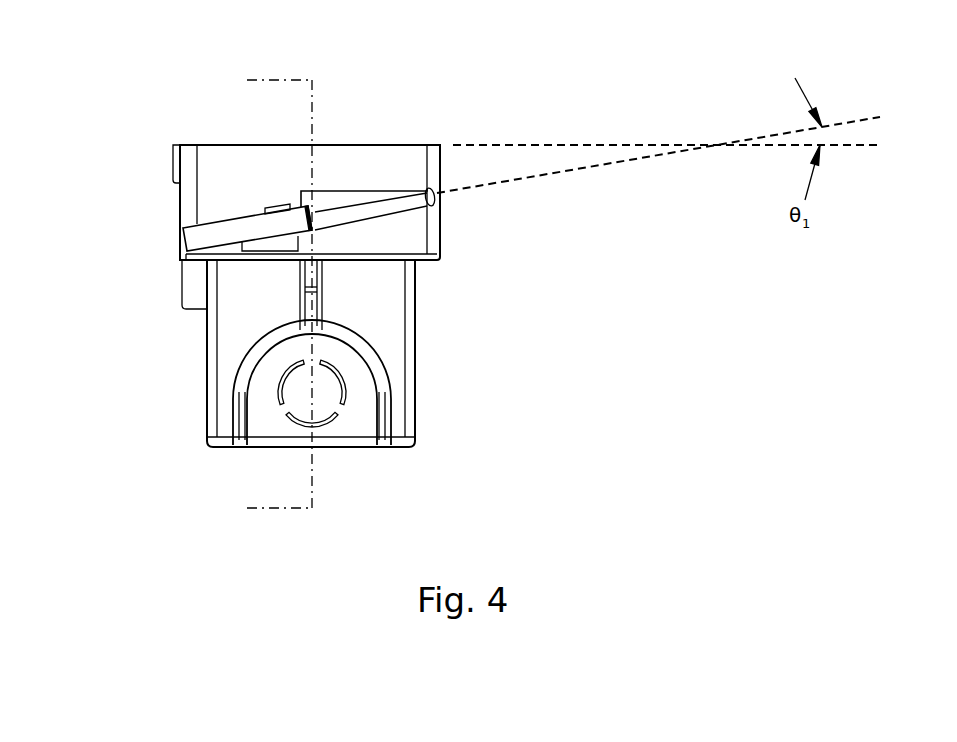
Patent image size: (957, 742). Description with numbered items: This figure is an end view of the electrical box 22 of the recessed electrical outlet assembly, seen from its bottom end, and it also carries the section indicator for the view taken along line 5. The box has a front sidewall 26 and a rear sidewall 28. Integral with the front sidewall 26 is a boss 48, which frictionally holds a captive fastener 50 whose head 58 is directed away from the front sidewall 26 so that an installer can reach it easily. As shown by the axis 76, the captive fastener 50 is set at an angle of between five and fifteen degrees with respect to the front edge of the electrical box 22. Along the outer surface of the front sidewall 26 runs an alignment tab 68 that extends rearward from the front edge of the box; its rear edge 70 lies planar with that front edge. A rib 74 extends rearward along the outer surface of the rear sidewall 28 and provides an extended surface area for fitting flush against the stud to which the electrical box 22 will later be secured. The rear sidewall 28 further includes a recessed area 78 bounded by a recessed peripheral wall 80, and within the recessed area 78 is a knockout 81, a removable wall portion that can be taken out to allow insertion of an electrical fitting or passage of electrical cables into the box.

The electrical box 22 is at (583, 400).
The front sidewall 26 is at (267, 187).
The rear sidewall 28 is at (378, 307).
The boss 48 is at (197, 238).
The captive fastener 50 is at (367, 202).
The head 58 is at (337, 143).
The alignment tab 68 is at (173, 155).
The rear edge 70 is at (177, 183).
The rib 74 is at (192, 284).
The axis 76 is at (563, 172).
The recessed area 78 is at (352, 415).
The recessed peripheral wall 80 is at (382, 413).
The knockout 81 is at (308, 400).
The section line 5- 5 is at (238, 80).